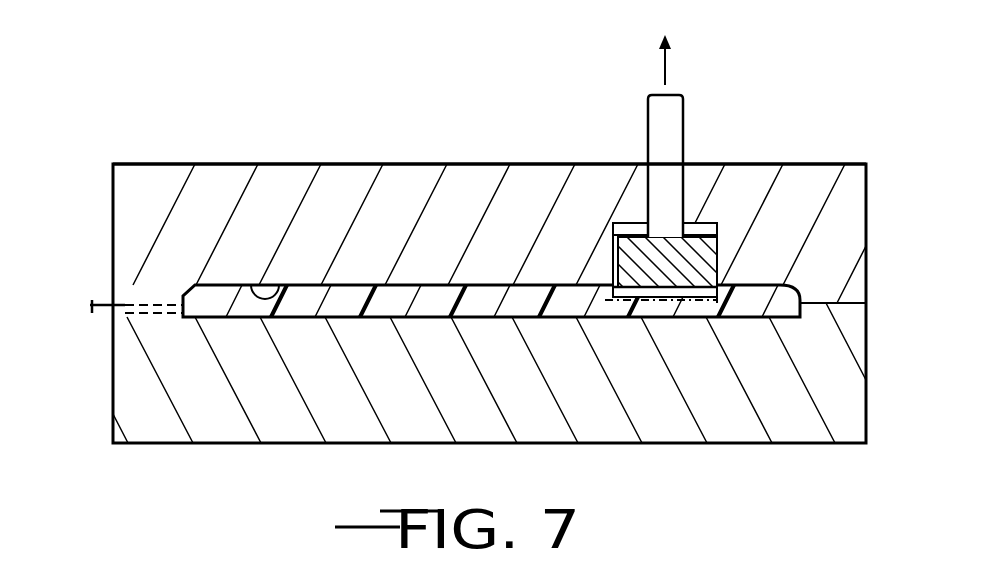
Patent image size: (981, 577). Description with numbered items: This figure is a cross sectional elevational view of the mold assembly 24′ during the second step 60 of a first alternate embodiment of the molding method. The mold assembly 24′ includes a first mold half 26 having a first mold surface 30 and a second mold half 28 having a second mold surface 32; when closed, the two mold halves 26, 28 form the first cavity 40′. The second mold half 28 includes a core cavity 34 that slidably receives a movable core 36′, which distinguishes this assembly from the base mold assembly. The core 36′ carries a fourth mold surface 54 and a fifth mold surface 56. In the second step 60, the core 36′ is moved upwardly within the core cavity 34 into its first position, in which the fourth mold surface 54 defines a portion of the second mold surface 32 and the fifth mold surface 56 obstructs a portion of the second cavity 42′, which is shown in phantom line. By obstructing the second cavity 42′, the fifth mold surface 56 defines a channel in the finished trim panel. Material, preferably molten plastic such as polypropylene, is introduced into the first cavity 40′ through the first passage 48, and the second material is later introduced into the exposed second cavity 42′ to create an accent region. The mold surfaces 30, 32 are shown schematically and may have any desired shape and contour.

The second step 60 is at (155, 75).
The mold assembly 24′ is at (342, 148).
The second mold half 28 is at (157, 183).
The first mold half 26 is at (220, 425).
The first mold surface 30 is at (335, 315).
The second mold surface 32 is at (278, 284).
The core cavity 34 is at (698, 220).
The movable core 36′ is at (703, 252).
The first cavity 40′ is at (483, 320).
The second cavity 42′ is at (660, 303).
The first passage 48 is at (100, 314).
The fourth mold surface 54 is at (606, 290).
The fifth mold surface 56 is at (718, 310).